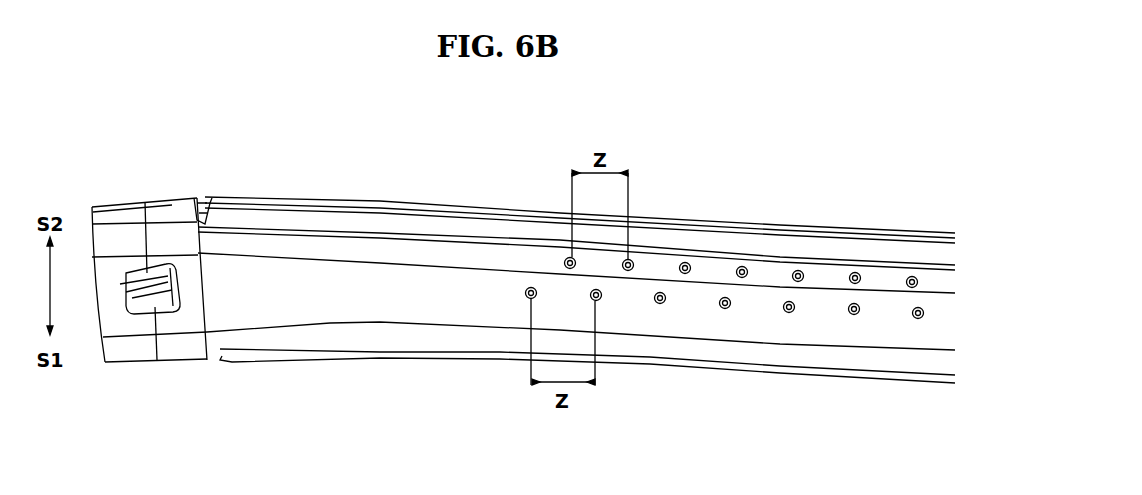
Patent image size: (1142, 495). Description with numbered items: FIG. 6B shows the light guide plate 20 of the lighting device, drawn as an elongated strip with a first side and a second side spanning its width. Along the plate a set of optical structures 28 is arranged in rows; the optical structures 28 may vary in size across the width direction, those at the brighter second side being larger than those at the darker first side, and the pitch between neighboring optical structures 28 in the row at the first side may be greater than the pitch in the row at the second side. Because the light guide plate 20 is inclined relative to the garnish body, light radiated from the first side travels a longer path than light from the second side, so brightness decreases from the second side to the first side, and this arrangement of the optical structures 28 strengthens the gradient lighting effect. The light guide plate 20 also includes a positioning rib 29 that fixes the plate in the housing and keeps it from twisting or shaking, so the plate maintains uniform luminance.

The light guide plate 20 is at (363, 250).
The optical structure 28 is at (687, 260).
The positioning rib 29 is at (730, 368).